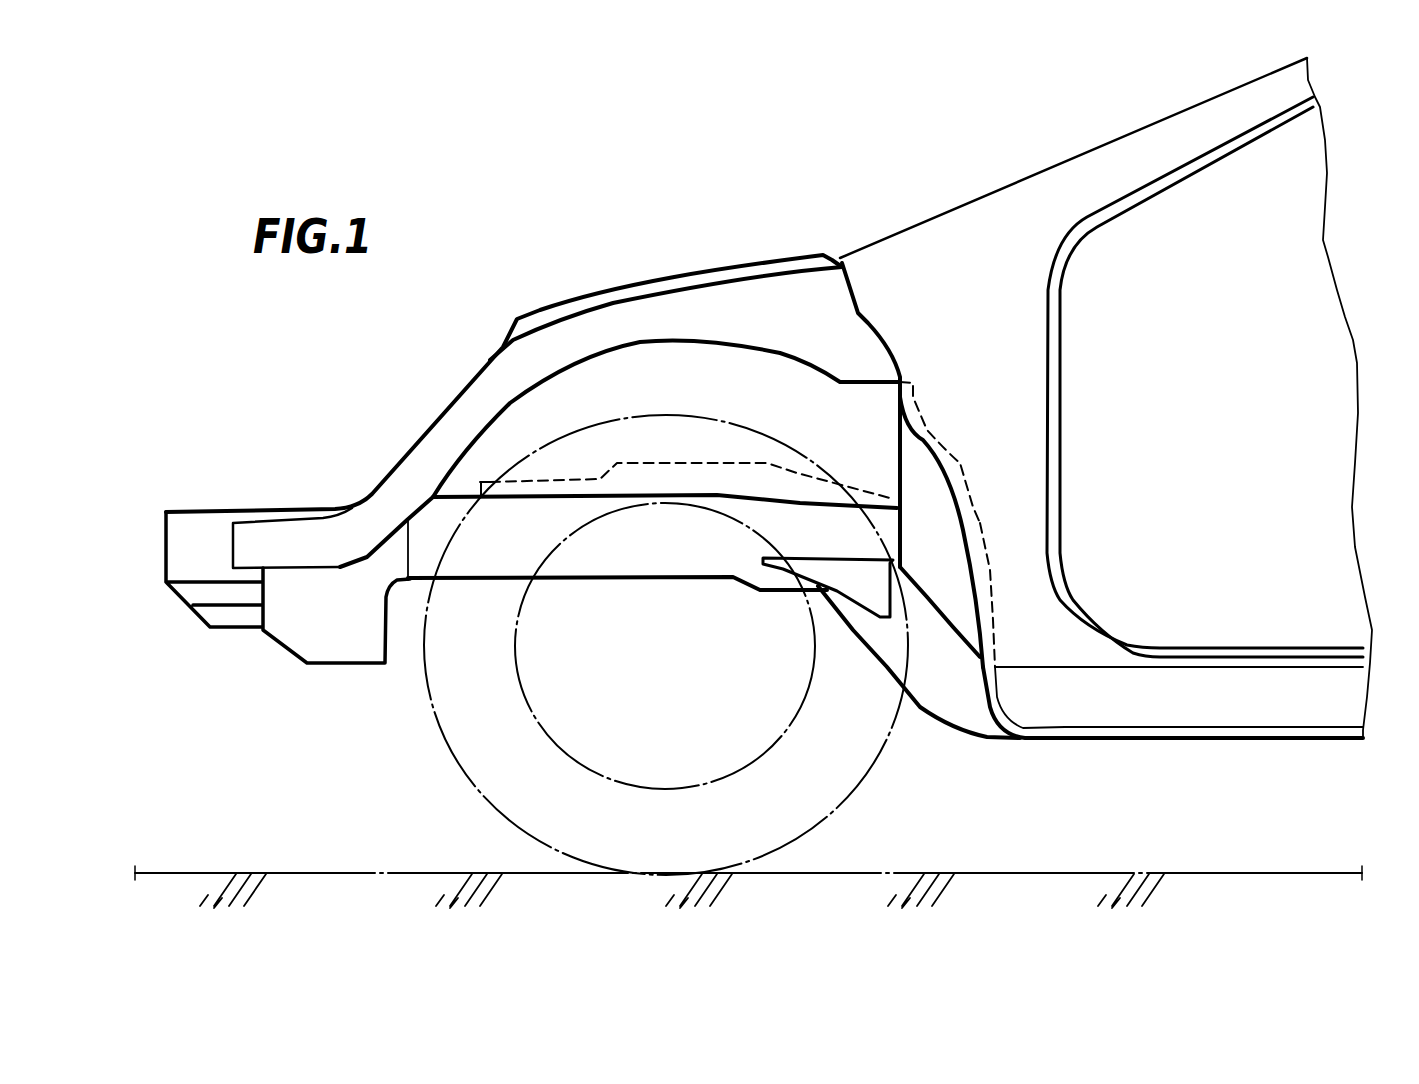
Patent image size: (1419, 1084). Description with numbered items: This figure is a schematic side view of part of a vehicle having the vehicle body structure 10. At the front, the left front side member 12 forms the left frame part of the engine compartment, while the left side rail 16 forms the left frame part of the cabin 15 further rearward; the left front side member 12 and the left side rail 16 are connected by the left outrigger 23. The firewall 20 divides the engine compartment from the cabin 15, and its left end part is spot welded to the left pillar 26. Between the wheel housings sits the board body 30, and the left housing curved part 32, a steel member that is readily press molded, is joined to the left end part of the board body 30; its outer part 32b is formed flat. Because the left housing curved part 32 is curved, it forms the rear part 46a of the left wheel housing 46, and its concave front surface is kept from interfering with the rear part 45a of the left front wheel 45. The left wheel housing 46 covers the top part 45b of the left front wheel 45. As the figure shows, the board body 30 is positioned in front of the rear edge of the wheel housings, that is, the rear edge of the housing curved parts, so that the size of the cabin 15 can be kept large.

The vehicle body structure 10 is at (608, 163).
The left front side member 12 is at (613, 568).
The cabin 15 is at (1266, 387).
The left side rail 16 is at (1302, 713).
The firewall 20 is at (920, 410).
The left outrigger 23 is at (933, 700).
The left pillar 26 is at (930, 222).
The board body 30 is at (900, 465).
The left housing curved part 32 is at (933, 480).
The outer part 32b is at (980, 522).
The left front wheel 45 is at (435, 680).
The rear part of the left front wheel 45a is at (907, 607).
The top part of the left front wheel 45b is at (665, 430).
The left wheel housing 46 is at (567, 390).
The rear part of the left wheel housing 46a is at (995, 643).